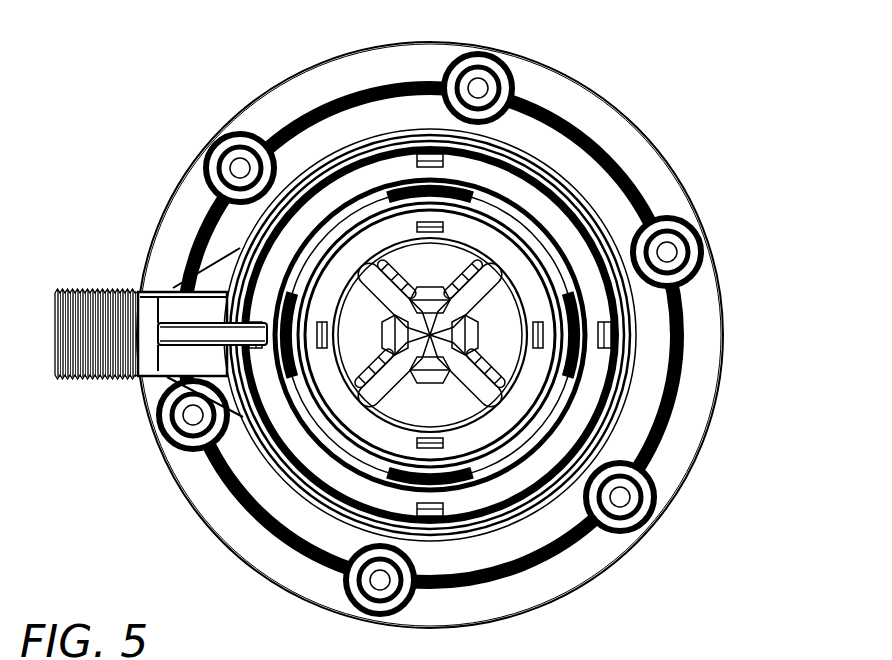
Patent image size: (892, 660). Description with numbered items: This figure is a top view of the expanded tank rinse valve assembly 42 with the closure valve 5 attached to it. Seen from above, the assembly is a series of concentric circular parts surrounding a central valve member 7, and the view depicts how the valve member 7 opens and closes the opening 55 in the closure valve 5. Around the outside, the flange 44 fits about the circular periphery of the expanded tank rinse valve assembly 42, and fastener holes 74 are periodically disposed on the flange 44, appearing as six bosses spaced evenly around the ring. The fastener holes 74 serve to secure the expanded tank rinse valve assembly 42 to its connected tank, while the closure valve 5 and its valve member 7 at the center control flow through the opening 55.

The expanded tank rinse valve assembly 42 is at (665, 94).
The flange 44 is at (724, 333).
The opening 55 is at (380, 218).
The fastener holes 74 is at (512, 92).
The valve member 7 is at (513, 316).
The closure valve 5 is at (604, 409).